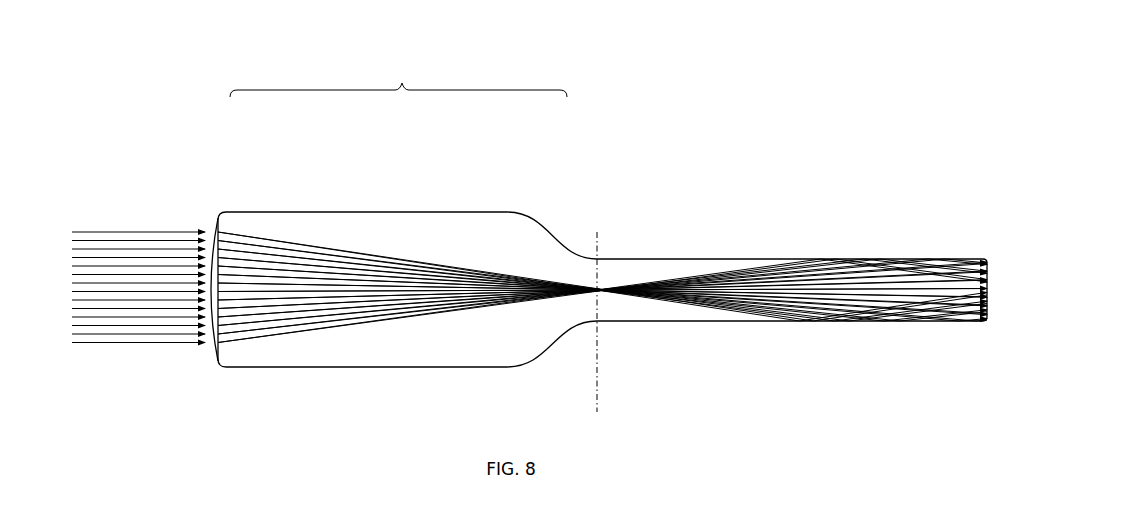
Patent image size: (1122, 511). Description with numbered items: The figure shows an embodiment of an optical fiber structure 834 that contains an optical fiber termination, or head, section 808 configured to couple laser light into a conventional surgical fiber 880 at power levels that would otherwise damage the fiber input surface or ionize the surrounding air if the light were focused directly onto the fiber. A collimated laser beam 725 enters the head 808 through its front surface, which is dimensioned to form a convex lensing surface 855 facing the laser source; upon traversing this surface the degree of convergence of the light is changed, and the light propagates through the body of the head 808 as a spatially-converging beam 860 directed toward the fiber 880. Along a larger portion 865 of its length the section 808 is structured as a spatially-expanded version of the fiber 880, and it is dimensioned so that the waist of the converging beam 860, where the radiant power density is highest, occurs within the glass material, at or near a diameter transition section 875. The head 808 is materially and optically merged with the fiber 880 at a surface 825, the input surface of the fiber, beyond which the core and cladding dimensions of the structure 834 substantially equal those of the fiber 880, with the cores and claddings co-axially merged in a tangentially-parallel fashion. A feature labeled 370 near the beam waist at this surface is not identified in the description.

The OF termination 808 is at (398, 77).
The optical fiber structure 834 is at (615, 105).
The larger portion of the section length 865 is at (350, 211).
The lensing surface 855 is at (212, 224).
The diameter transition section 875 is at (557, 231).
The collimated laser beam 725 is at (138, 287).
The spatially-converging beam 860 is at (412, 287).
The surgical fiber 880 is at (893, 175).
The input surface of the fiber 825 is at (605, 377).
The focal point 370 is at (600, 303).